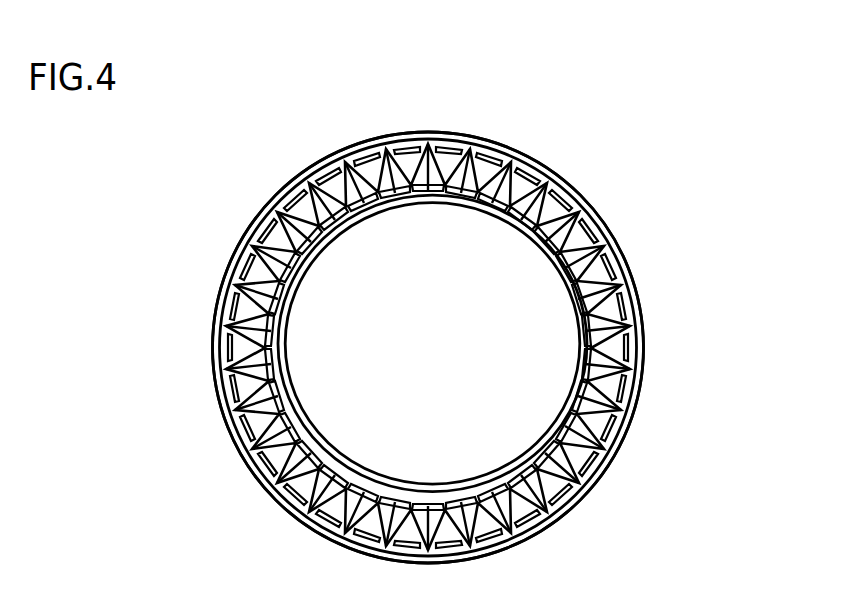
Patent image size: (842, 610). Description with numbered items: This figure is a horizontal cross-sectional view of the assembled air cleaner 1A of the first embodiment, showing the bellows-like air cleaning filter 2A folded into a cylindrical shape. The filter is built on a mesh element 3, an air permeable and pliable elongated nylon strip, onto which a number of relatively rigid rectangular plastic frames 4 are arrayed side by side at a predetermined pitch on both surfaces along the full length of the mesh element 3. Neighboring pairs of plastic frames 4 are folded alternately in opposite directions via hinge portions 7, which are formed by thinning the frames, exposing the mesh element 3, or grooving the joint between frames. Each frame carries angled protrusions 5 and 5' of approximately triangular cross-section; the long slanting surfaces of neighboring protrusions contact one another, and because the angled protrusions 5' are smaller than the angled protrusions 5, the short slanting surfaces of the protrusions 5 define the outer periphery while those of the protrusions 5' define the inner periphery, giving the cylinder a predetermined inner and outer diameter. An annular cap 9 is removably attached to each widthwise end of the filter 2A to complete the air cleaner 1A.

The air cleaner 1A is at (533, 102).
The bellows-like air cleaning filter 2A is at (572, 197).
The mesh element 3 is at (444, 165).
The plastic frames 4 is at (352, 106).
The angled protrusions 5 is at (428, 324).
The angled protrusions 5' is at (428, 347).
The hinge portions 7 is at (469, 170).
The annular cap 9 is at (645, 325).